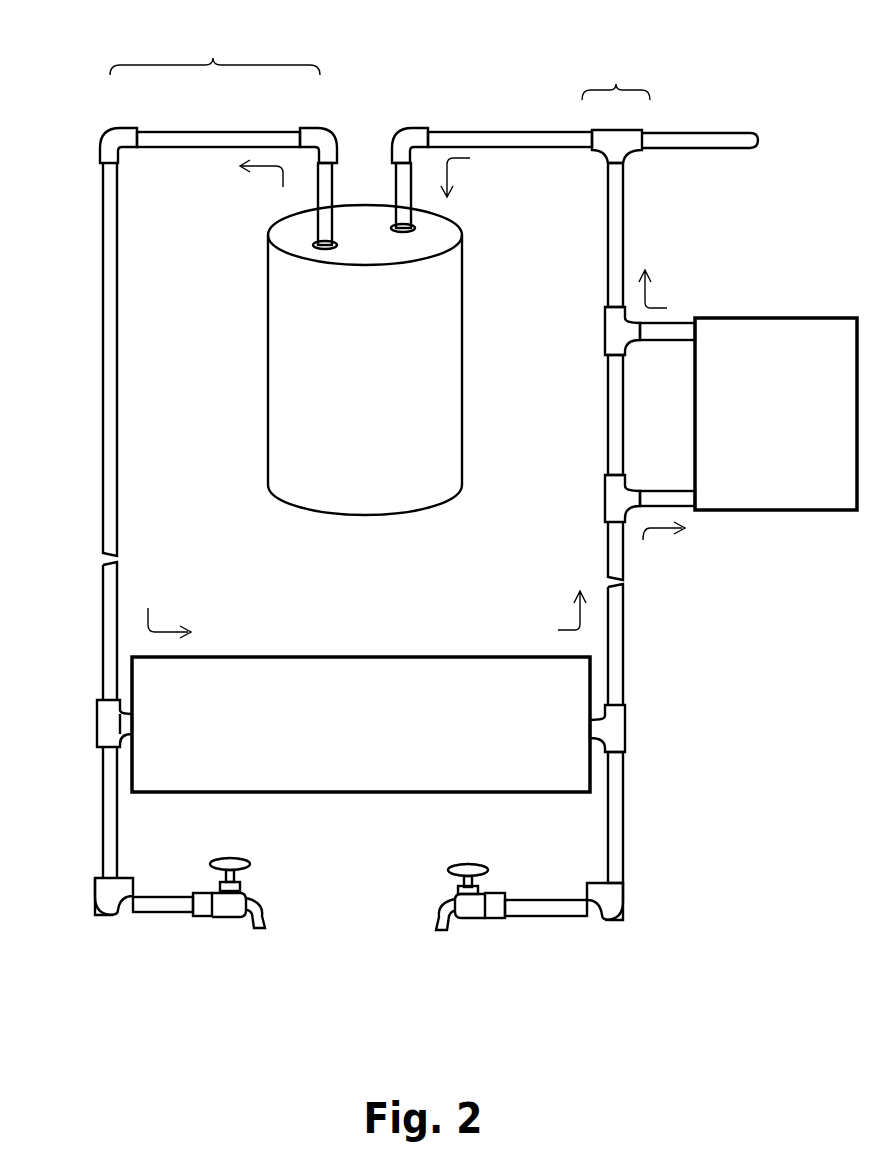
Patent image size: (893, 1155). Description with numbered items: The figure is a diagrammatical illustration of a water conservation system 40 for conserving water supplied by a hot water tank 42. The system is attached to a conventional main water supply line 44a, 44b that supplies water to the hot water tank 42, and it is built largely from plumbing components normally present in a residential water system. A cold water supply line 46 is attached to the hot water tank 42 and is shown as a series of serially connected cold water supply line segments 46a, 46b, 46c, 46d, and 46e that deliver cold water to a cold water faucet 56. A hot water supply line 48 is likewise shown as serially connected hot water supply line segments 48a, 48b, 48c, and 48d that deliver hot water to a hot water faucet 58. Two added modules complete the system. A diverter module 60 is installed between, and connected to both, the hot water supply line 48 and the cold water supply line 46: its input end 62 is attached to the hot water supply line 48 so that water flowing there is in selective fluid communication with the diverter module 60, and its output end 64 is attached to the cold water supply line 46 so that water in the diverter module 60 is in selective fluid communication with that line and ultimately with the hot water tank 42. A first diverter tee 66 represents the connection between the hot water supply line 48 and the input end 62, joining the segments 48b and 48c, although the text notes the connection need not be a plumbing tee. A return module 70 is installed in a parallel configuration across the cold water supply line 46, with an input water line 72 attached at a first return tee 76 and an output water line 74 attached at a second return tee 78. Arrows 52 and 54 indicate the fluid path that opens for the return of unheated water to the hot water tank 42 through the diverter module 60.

The water conservation system 40 is at (497, 53).
The hot water tank 42 is at (375, 517).
The main water supply line 44a is at (695, 132).
The main water supply line 44b is at (508, 130).
The cold water supply line 46 is at (616, 75).
The cold water supply line segment 46a is at (625, 226).
The cold water supply line segment 46b is at (607, 405).
The cold water supply line segment 46c is at (625, 632).
The cold water supply line segment 46d is at (623, 860).
The cold water supply line segment 46e is at (555, 918).
The hot water supply line 48 is at (215, 52).
The hot water supply line segment 48a is at (217, 130).
The hot water supply line segment 48b is at (120, 362).
The hot water supply line segment 48c is at (120, 870).
The hot water supply line segment 48d is at (165, 913).
The arrow 52 is at (152, 612).
The arrow 54 is at (558, 630).
The cold water faucet 56 is at (468, 922).
The hot water faucet 58 is at (228, 925).
The diverter module 60 is at (320, 794).
The input end 62 is at (130, 768).
The output end 64 is at (594, 777).
The first diverter tee 66 is at (97, 708).
The return module 70 is at (787, 318).
The input water line 72 is at (672, 490).
The output water line 74 is at (680, 320).
The first return tee 76 is at (605, 510).
The second return tee 78 is at (605, 323).